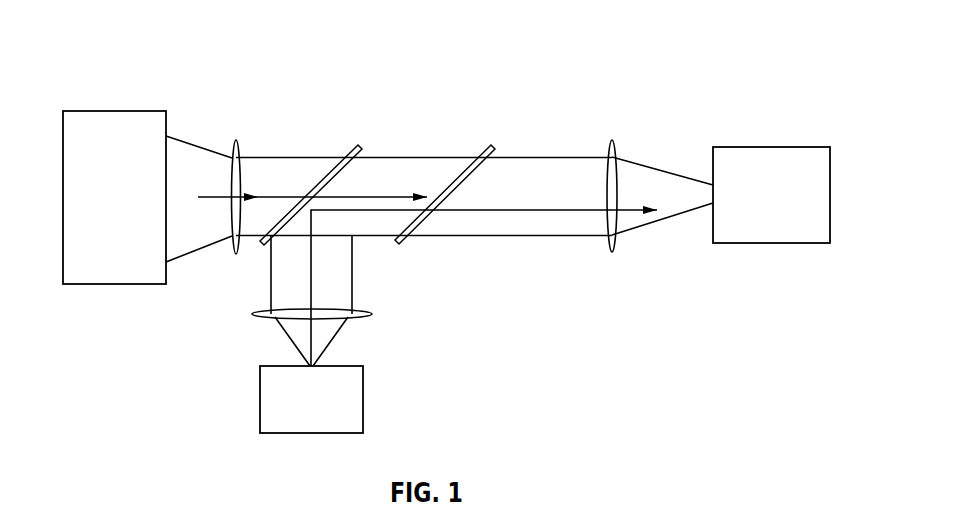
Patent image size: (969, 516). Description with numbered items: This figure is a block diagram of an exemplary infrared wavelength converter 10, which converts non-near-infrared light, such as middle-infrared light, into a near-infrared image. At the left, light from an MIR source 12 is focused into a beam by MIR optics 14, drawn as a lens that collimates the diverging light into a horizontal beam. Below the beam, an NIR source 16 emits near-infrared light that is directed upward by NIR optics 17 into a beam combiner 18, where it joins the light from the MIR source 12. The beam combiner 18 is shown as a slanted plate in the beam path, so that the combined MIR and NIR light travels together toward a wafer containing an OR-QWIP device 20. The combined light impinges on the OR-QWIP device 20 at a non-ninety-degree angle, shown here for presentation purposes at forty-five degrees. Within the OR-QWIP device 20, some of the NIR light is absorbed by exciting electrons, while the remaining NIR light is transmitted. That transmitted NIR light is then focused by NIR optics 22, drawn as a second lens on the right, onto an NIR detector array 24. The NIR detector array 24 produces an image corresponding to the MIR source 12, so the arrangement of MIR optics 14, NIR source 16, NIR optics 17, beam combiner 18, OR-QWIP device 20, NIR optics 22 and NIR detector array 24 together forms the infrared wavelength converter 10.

The infrared wavelength converter 10 is at (116, 34).
The MIR source 12 is at (110, 111).
The MIR optics 14 is at (240, 152).
The NIR source 16 is at (260, 400).
The NIR optics 17 is at (252, 313).
The beam combiner 18 is at (350, 150).
The OR-QWIP device 20 is at (402, 242).
The NIR optics 22 is at (618, 150).
The NIR detector array 24 is at (760, 147).